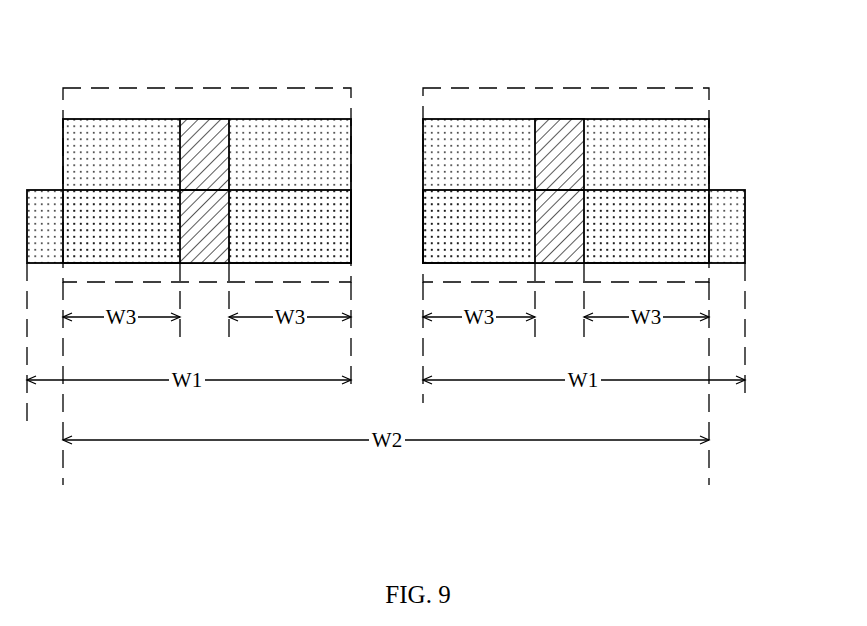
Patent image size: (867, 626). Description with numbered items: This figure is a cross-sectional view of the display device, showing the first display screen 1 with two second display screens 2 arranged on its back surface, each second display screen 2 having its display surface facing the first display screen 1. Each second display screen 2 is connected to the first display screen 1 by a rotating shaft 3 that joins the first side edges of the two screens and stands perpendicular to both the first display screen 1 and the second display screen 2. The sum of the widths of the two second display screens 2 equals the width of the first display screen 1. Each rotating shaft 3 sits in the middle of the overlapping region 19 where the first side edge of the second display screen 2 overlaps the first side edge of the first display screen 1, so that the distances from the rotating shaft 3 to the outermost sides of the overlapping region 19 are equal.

The first display screen 1 is at (680, 143).
The second display screen 2 is at (722, 228).
The rotating shaft 3 is at (567, 157).
The overlapping region 19 is at (302, 88).